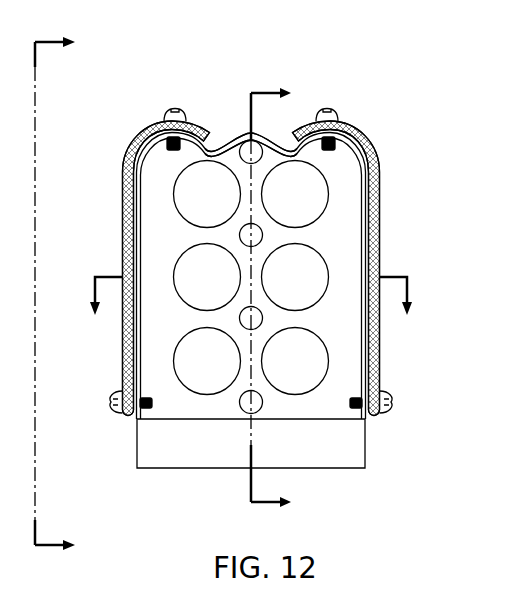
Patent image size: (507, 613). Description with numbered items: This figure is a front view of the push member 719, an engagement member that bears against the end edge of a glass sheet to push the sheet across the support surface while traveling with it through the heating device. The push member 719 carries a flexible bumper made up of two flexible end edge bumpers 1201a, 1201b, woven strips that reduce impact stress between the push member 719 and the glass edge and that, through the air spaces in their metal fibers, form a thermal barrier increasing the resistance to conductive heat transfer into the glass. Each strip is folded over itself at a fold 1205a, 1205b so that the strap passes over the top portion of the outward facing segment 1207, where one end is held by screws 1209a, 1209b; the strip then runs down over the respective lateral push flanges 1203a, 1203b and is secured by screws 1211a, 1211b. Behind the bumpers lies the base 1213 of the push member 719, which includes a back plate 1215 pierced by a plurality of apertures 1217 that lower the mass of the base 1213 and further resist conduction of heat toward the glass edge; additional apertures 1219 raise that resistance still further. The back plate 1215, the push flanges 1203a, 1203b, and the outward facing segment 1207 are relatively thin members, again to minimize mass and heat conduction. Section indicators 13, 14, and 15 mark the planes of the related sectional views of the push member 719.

The push member 719 is at (388, 138).
The flexible end edge bumper 1201a is at (123, 163).
The flexible end edge bumper 1201b is at (383, 190).
The lateral push flange 1203a is at (141, 230).
The lateral push flange 1203b is at (362, 220).
The fold 1205a is at (130, 422).
The fold 1205b is at (377, 419).
The outward facing segment 1207 is at (239, 126).
The screw 1209a is at (169, 111).
The screw 1209b is at (333, 111).
The screw 1211a is at (115, 413).
The screw 1211b is at (386, 398).
The base 1213 is at (357, 479).
The back plate 1215 is at (178, 408).
The apertures 1217 is at (297, 398).
The additional apertures 1219 is at (239, 320).
The section line 13- 13 is at (254, 318).
The section line 14- 14 is at (75, 294).
The section line 15- 15 is at (291, 298).